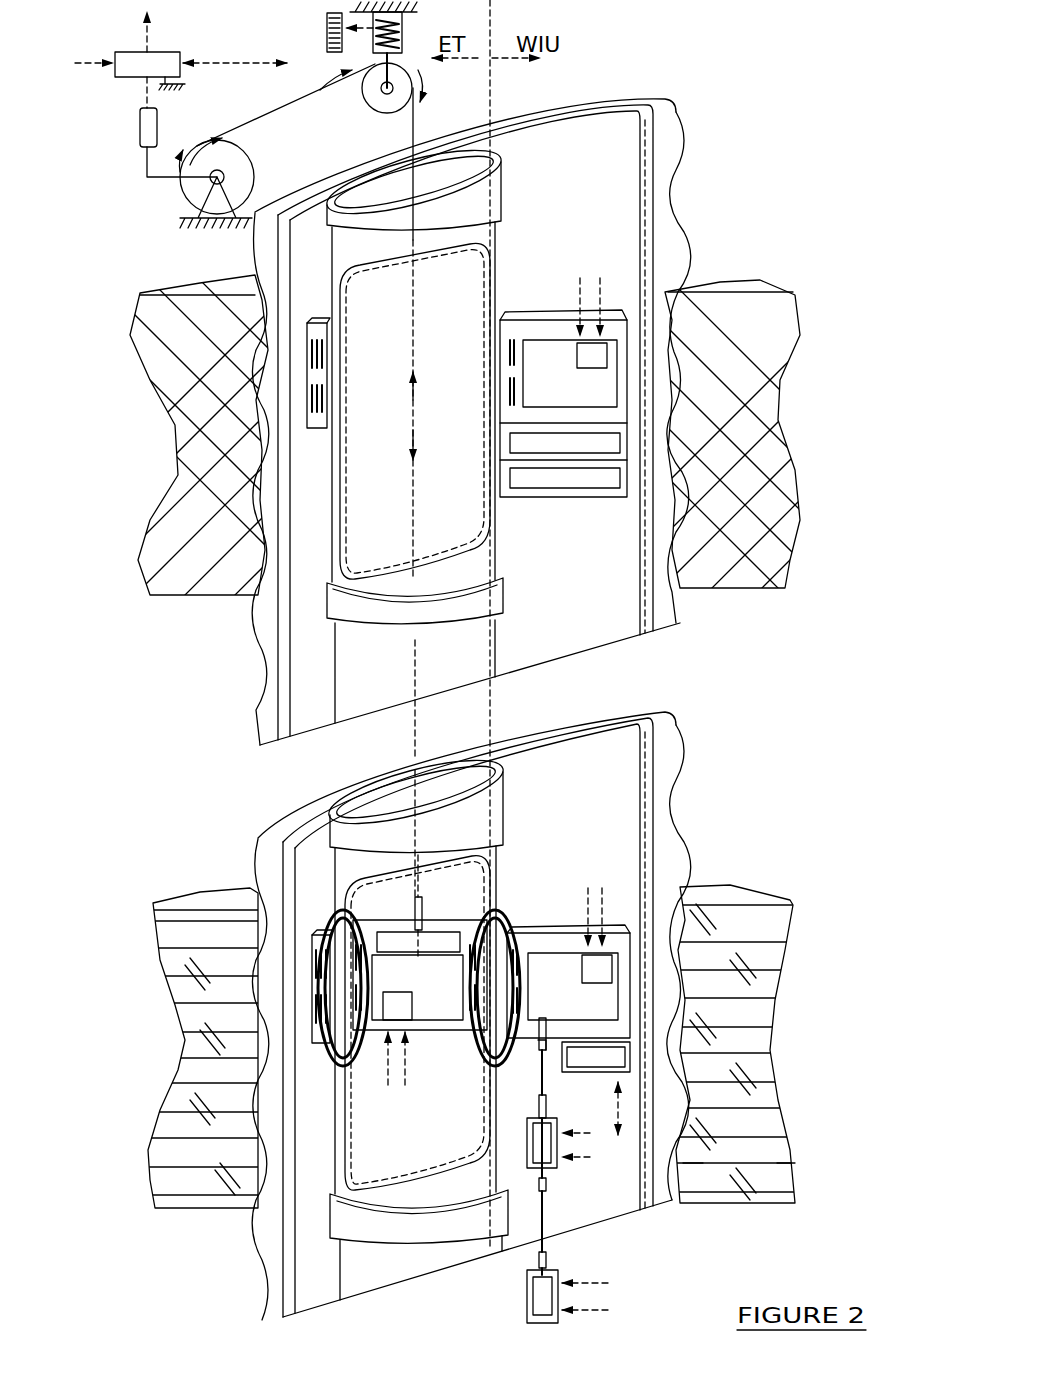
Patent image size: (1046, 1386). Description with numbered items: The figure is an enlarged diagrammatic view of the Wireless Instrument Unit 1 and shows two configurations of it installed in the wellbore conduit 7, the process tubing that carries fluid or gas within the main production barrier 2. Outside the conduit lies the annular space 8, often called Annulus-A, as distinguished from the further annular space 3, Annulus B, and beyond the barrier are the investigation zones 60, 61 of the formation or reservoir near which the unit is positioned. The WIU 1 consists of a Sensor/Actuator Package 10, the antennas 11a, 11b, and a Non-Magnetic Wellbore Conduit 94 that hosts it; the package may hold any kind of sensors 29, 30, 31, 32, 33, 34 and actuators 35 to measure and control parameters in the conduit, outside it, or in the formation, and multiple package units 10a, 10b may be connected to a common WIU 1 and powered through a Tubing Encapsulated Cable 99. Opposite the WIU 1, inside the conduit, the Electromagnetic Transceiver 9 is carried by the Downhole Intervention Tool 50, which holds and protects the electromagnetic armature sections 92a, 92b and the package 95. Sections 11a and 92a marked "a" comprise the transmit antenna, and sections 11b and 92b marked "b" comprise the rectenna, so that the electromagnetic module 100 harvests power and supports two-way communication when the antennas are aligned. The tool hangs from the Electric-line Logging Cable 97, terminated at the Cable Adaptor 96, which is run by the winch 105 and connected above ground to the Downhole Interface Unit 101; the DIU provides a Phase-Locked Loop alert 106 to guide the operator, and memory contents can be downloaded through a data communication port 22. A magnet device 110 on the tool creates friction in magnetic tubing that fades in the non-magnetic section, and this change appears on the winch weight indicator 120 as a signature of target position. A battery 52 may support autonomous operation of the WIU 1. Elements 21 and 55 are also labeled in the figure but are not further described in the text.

The Wireless Instrument Unit 1 is at (550, 330).
The main production barrier 2 is at (647, 170).
The annular space 3 is at (667, 127).
The wellbore conduit 7 is at (481, 176).
The annular space 8 is at (578, 213).
The Electromagnetic Transceiver 9 is at (407, 962).
The Sensor/Actuator Package 10 is at (533, 347).
The Sensor/Actuator Package 10a is at (545, 1145).
The Sensor/Actuator Package 10b is at (545, 1290).
The antenna 11a is at (312, 352).
The antenna 11b is at (312, 398).
The input signal 21 is at (81, 62).
The data communication port 22 is at (235, 46).
The sensor 29 is at (479, 678).
The sensor 30 is at (518, 678).
The sensor 31 is at (591, 1132).
The sensor 32 is at (591, 1156).
The sensor 33 is at (601, 1282).
The sensor 34 is at (601, 1309).
The actuator 35 is at (600, 1058).
The Downhole Intervention Tool 50 is at (452, 1026).
The energy source 52 is at (600, 443).
The power unit 55 is at (600, 478).
The investigation zone 60 is at (775, 330).
The investigation zone 61 is at (742, 932).
The electromagnetic armature section 92a is at (473, 1022).
The electromagnetic armature section 92b is at (475, 966).
The Non-Magnetic Wellbore Conduit 94 is at (477, 572).
The Sensor/Actuator Package 95 is at (390, 1009).
The Cable Adaptor 96 is at (417, 912).
The Electric-line Logging Cable 97 is at (145, 163).
The Tubing Encapsulated Cable 99 is at (541, 1062).
The electromagnetic module 100 is at (497, 923).
The Downhole Interface Unit 101 is at (150, 71).
The winch 105 is at (191, 189).
The Phase-Locked Loop alert 106 is at (123, 28).
The magnet device 110 is at (408, 941).
The winch weight indicator 120 is at (398, 38).